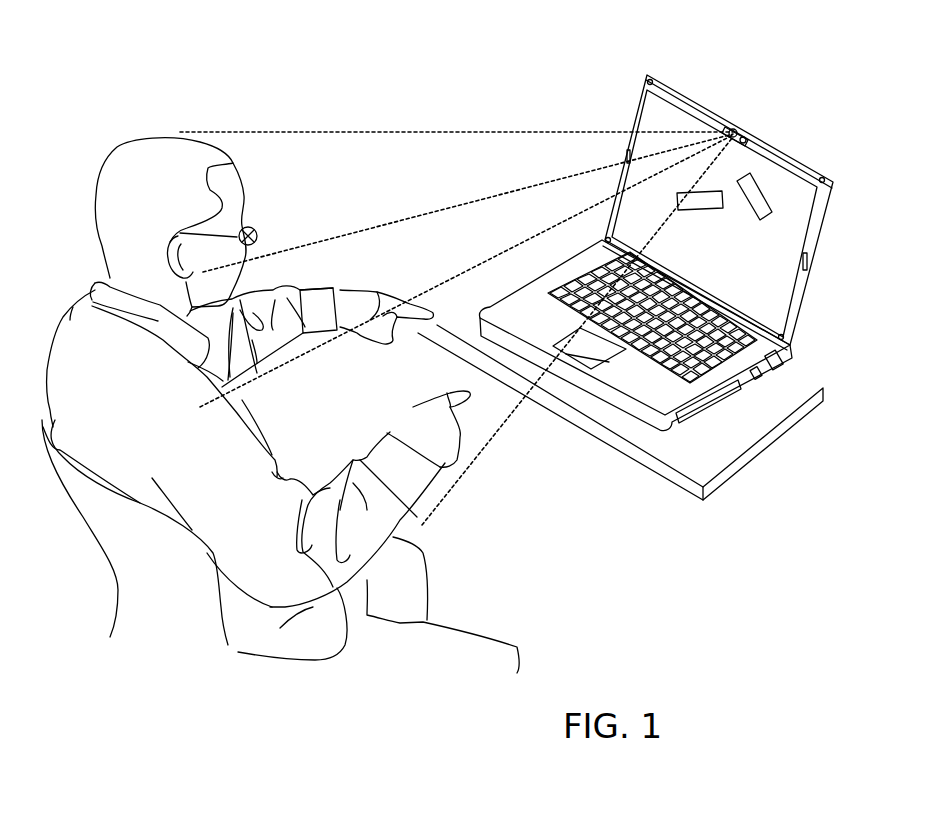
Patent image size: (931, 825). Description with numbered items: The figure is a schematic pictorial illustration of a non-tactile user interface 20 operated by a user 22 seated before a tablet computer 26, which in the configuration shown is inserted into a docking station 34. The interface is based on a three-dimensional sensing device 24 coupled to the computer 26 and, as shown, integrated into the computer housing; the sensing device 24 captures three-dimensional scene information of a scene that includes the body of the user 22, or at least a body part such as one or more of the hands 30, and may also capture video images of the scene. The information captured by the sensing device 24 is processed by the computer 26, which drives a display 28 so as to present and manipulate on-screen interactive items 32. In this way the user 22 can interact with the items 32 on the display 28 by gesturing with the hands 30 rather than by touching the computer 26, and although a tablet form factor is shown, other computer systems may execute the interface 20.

The non-tactile user interface 20 is at (196, 78).
The user 22 is at (113, 148).
The 3D sensing device 24 is at (740, 128).
The tablet computer 26 is at (630, 120).
The display 28 is at (668, 109).
The hands 30 is at (380, 345).
The on-screen interactive items 32 is at (700, 211).
The docking station 34 is at (690, 398).